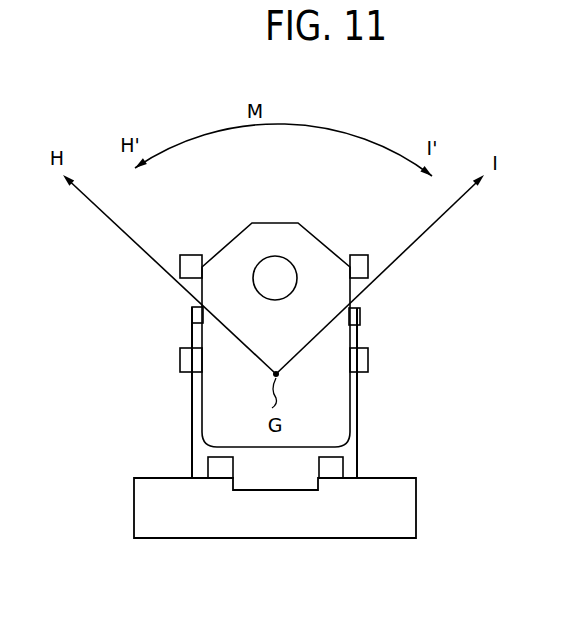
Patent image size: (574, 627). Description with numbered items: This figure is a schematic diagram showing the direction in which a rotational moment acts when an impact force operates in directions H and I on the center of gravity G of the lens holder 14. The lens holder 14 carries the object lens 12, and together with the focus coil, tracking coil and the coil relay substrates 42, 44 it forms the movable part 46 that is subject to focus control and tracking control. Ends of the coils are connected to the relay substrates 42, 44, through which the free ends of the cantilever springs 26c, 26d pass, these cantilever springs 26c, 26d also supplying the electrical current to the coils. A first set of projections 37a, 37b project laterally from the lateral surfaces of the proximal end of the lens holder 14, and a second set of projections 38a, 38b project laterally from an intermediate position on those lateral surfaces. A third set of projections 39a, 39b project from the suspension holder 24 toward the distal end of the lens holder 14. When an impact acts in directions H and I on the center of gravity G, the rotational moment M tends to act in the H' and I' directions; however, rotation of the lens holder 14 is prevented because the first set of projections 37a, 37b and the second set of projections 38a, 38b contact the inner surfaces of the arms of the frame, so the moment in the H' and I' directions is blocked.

The movable part 46 is at (221, 178).
The object lens 12 is at (277, 270).
The lens holder 14 is at (362, 402).
The first set of projections 37a is at (185, 253).
The first set of projections 37b is at (360, 262).
The relay substrate 42 is at (192, 311).
The relay substrate 44 is at (360, 312).
The second set of projections 38a is at (180, 358).
The second set of projections 38b is at (368, 360).
The cantilever spring 26c is at (192, 423).
The cantilever spring 26d is at (357, 437).
The third set of projections 39a is at (218, 475).
The third set of projections 39b is at (335, 475).
The suspension holder 24 is at (413, 493).